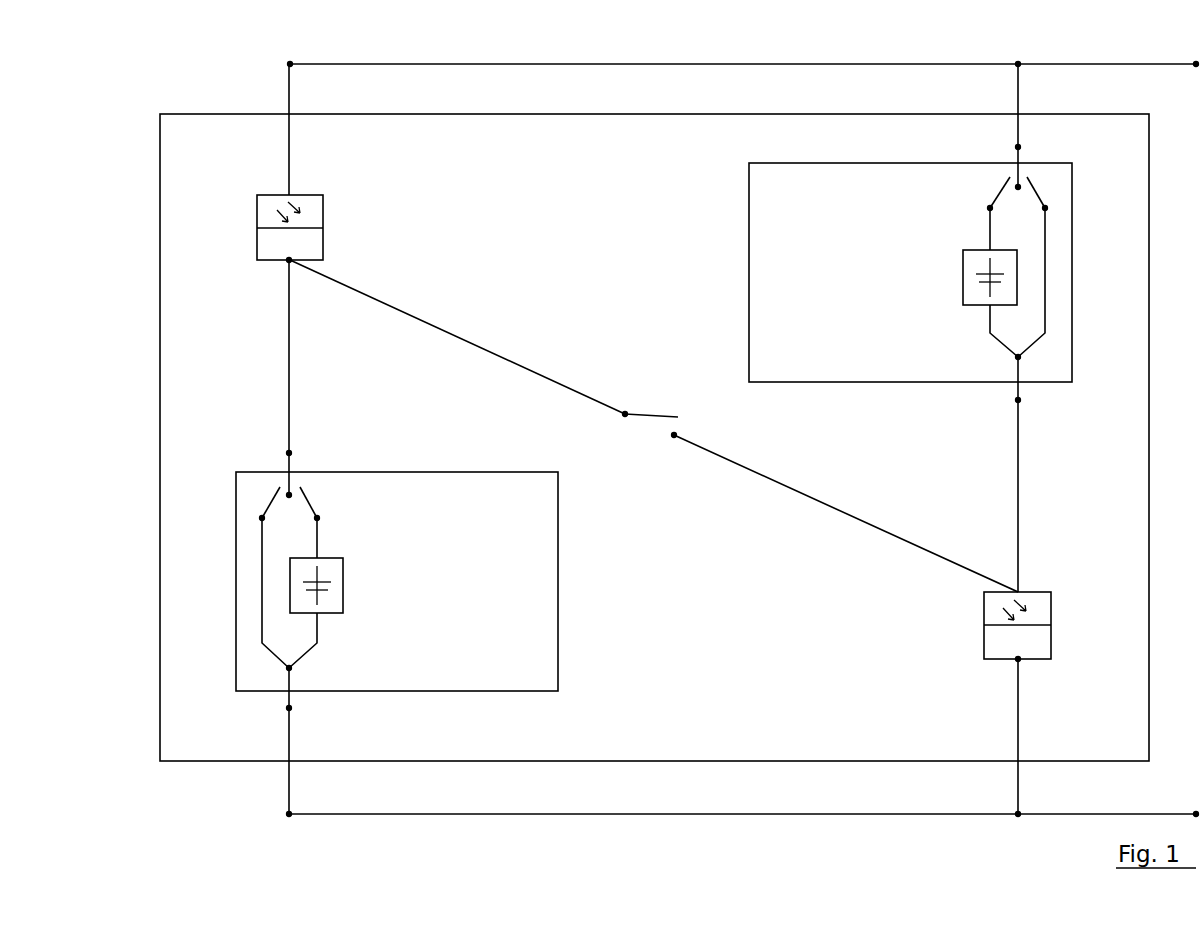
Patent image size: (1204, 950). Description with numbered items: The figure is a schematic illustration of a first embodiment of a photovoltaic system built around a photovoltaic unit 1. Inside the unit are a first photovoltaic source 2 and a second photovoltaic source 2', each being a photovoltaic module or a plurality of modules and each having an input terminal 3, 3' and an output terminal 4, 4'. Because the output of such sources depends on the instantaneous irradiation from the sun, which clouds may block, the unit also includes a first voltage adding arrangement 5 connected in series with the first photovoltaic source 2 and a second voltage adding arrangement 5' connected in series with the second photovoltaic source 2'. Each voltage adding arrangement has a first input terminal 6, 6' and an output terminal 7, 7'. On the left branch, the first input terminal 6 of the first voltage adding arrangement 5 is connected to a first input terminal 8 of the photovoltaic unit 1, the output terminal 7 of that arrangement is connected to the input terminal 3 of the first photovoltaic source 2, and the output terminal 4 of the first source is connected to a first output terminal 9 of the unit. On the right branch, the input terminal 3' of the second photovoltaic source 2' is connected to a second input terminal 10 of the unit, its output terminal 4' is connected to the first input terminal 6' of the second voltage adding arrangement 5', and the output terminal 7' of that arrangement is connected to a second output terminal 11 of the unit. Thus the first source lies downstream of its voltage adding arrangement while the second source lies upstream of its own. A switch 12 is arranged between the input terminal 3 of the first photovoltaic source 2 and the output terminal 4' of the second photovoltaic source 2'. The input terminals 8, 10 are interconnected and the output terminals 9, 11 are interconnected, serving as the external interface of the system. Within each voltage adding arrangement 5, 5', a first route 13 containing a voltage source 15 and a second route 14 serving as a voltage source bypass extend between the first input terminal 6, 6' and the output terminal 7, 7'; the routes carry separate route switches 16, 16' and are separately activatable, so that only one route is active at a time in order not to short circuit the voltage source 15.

The photovoltaic unit 1 is at (200, 130).
The first photovoltaic source 2 is at (322, 227).
The second photovoltaic source 2' is at (988, 625).
The input terminal 3 is at (261, 283).
The input terminal 3' is at (993, 683).
The output terminal 4 is at (310, 184).
The output terminal 4' is at (1043, 578).
The first voltage adding arrangement 5 is at (427, 581).
The second voltage adding arrangement 5' is at (884, 272).
The first input terminal 6 is at (315, 724).
The first input terminal 6' is at (993, 418).
The output terminal 7 is at (319, 427).
The output terminal 7' is at (993, 136).
The first input terminal 8 is at (290, 813).
The first output terminal 9 is at (292, 66).
The second input terminal 10 is at (1020, 813).
The second output terminal 11 is at (1020, 66).
The switch 12 is at (650, 413).
The first route 13 is at (318, 630).
The second route 14 is at (262, 583).
The voltage source 15 is at (343, 583).
The route switch 16 is at (674, 349).
The route switch 16' is at (658, 346).